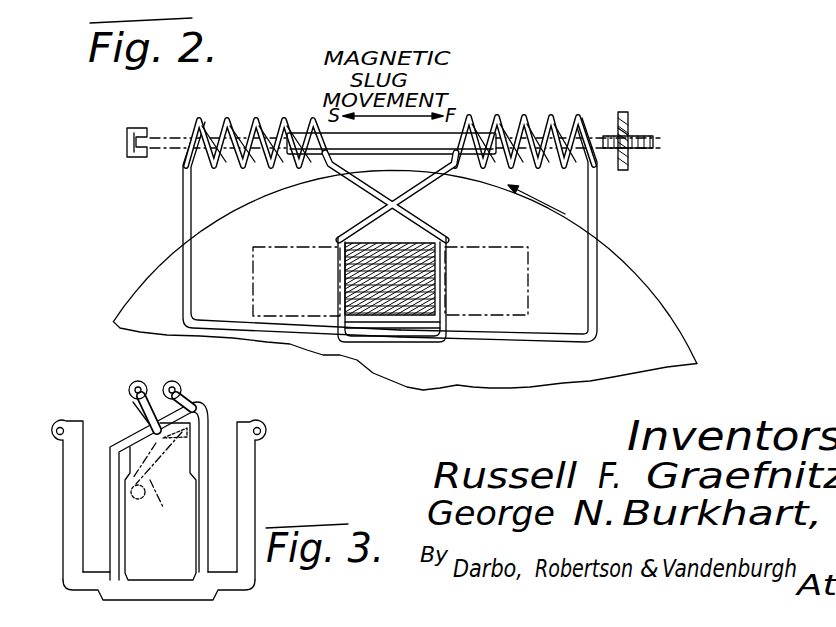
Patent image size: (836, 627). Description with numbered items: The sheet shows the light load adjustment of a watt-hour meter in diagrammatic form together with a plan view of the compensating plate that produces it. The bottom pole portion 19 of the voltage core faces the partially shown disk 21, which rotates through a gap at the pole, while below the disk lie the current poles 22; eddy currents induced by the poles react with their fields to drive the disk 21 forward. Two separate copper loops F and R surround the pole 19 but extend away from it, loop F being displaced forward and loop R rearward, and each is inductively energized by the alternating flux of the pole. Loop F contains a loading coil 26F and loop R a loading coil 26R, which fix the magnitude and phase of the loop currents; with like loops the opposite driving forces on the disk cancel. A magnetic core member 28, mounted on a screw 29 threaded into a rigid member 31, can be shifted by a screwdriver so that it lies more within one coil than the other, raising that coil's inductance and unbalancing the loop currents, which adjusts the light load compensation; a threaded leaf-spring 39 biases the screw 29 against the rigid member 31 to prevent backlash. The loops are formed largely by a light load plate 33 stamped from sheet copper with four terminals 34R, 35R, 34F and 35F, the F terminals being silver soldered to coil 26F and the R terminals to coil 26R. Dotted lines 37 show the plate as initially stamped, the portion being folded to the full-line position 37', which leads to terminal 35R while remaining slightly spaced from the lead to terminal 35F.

In FIG. 2, the bottom pole portion 19 is at (404, 310).
In FIG. 2, the disk 21 is at (667, 337).
In FIG. 2, the current poles 22 is at (292, 228).
In FIG. 2, the coil 26F is at (253, 120).
In FIG. 2, the coil 26R is at (522, 120).
In FIG. 2, the magnetic core member 28 is at (377, 150).
In FIG. 2, the screw 29 is at (650, 136).
In FIG. 2, the rigid member 31 is at (132, 158).
In FIG. 3, the light load plate 33 is at (181, 474).
In FIG. 3, the terminal 34F is at (55, 422).
In FIG. 3, the terminal 34R is at (263, 427).
In FIG. 3, the terminal 35F is at (147, 368).
In FIG. 3, the terminal 35R is at (180, 388).
In FIG. 3, the dotted-line portion 37 is at (160, 501).
In FIG. 3, the folded portion 37' is at (117, 398).
In FIG. 2, the threaded leaf-spring 39 is at (616, 128).
In FIG. 2, the loop F is at (188, 198).
In FIG. 2, the loop R is at (597, 197).